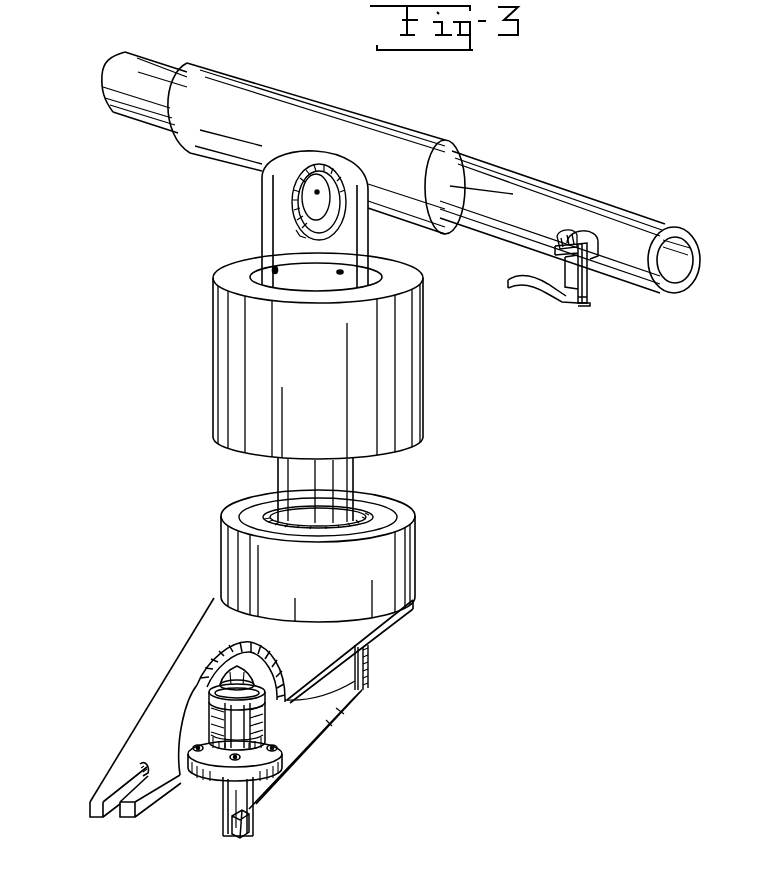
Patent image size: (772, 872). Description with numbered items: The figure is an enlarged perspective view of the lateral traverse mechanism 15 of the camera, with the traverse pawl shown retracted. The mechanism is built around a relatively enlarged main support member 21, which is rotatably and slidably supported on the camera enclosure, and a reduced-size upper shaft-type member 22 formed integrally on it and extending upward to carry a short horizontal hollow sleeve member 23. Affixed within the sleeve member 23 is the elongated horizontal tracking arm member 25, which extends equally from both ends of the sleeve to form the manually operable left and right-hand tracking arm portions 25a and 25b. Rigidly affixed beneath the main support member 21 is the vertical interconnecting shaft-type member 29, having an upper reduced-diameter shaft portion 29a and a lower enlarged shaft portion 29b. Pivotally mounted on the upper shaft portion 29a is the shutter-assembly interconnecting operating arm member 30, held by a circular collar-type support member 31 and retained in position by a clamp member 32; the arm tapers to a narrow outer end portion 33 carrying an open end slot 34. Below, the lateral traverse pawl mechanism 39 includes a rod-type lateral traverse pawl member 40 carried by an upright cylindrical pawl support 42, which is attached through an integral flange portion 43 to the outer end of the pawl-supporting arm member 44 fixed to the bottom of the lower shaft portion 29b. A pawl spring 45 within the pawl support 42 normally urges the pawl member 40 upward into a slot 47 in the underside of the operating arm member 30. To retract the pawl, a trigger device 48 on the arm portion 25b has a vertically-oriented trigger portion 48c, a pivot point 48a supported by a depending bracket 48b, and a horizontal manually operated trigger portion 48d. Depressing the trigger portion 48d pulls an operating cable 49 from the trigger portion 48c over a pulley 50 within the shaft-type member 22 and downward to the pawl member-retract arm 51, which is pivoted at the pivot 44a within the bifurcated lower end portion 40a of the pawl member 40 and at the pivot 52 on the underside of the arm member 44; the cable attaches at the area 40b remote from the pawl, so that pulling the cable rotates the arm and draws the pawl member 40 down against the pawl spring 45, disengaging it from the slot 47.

The lateral traverse mechanism 15 is at (275, 356).
The main support member 21 is at (302, 366).
The upper shaft-type member 22 is at (337, 219).
The supporting hollow sleeve member 23 is at (291, 93).
The tracking arm member 25 is at (583, 189).
The left-hand tracking arm portion 25a is at (104, 80).
The right-hand tracking arm portion 25b is at (672, 227).
The interconnecting shaft-type member 29 is at (315, 490).
The upper shaft portion 29a is at (278, 478).
The lower shaft portion 29b is at (374, 653).
The interconnecting operating arm member 30 is at (241, 722).
The collar-type support member 31 is at (295, 586).
The clamp member 32 is at (363, 525).
The outer end portion 33 is at (149, 806).
The open end slot 34 is at (128, 777).
The lateral traverse pawl mechanism 39 is at (308, 712).
The lateral traverse pawl member 40 is at (228, 677).
The bifurcated lower end portion 40a is at (223, 803).
The cable attachment area 40b is at (340, 721).
The cylindrical pawl support 42 is at (208, 698).
The integral flange portion 43 is at (264, 750).
The pawl-supporting arm member 44 is at (365, 698).
The pivot 44a is at (255, 812).
The pawl spring 45 is at (212, 720).
The slot 47 is at (262, 666).
The traverse pawl-retract trigger device 48 is at (558, 280).
The pivot point 48a is at (589, 306).
The bracket 48b is at (590, 280).
The vertically-oriented trigger portion 48c is at (593, 258).
The horizontally-disposed trigger portion 48d is at (513, 289).
The operating cable 49 is at (558, 240).
The pulley 50 is at (336, 221).
The pawl member-retract arm 51 is at (268, 797).
The pivot 52 is at (326, 736).